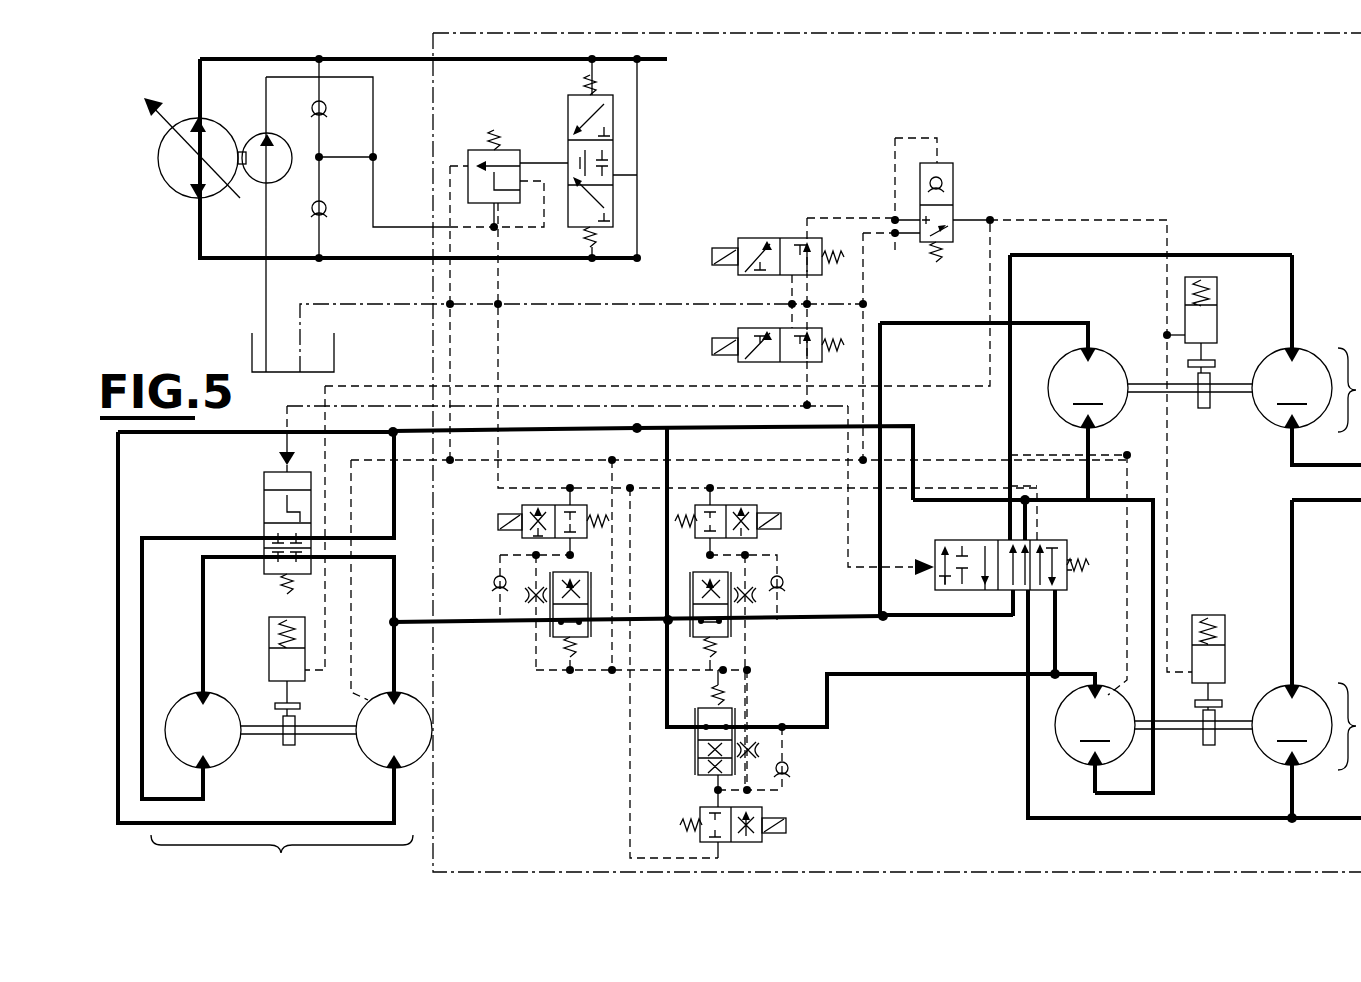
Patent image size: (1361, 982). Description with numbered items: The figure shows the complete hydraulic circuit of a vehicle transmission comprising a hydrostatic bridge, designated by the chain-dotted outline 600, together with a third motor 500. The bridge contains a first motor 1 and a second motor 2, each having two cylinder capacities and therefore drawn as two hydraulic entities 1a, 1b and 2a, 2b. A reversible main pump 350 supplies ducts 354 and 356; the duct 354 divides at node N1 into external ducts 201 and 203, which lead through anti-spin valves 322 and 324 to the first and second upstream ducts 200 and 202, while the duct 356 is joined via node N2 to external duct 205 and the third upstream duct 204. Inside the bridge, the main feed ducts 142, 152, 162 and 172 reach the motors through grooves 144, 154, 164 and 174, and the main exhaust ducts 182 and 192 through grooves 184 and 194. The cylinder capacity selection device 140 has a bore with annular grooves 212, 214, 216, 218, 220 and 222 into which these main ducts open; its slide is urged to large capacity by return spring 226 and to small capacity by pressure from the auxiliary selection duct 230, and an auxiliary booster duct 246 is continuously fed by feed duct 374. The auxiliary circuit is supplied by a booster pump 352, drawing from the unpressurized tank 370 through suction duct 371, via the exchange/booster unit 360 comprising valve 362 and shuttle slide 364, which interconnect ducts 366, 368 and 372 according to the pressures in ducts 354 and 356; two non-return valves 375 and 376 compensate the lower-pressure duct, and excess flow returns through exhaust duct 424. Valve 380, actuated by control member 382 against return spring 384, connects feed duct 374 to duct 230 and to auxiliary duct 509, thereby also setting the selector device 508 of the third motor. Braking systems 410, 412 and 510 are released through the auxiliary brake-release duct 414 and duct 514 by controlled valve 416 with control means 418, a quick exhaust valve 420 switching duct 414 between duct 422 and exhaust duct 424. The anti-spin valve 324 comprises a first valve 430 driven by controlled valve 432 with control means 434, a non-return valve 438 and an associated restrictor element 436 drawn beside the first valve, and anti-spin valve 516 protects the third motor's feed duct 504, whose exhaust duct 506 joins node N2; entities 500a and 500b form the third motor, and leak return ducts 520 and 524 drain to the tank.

The first motor 1 is at (1349, 390).
The second motor 2 is at (1349, 726).
The hydraulic entity of the first motor 1a is at (1088, 388).
The hydraulic entity of the first motor 1b is at (1230, 388).
The hydraulic entity of the second motor 2a is at (1095, 725).
The hydraulic entity of the second motor 2b is at (1233, 725).
The cylinder capacity selection device 140 is at (1005, 600).
The first main feed duct 142 is at (888, 325).
The first groove 144 is at (1118, 330).
The second main feed duct 152 is at (1210, 255).
The second groove 154 is at (1298, 342).
The third main feed duct 162 is at (1072, 662).
The third groove 164 is at (1101, 682).
The fourth main feed duct 172 is at (1326, 535).
The fourth groove 174 is at (1301, 682).
The first main exhaust duct 182 is at (1058, 499).
The fifth groove 184 is at (1077, 428).
The second main exhaust duct 192 is at (1027, 760).
The sixth groove 194 is at (1282, 440).
The first upstream duct 200 is at (862, 626).
The external duct 201 is at (680, 612).
The second upstream duct 202 is at (883, 678).
The external duct 203 is at (666, 657).
The third upstream duct 204 is at (893, 425).
The external duct 205 is at (718, 428).
The annular groove 212 is at (940, 585).
The annular groove 214 is at (940, 548).
The annular groove 216 is at (963, 545).
The annular groove 218 is at (961, 592).
The annular groove 220 is at (985, 545).
The annular groove 222 is at (990, 592).
The return spring 226 is at (1086, 570).
The auxiliary selection duct 230 is at (851, 568).
The auxiliary booster duct 246 is at (1046, 535).
The anti-spin valve 322 is at (772, 543).
The anti-spin valve 324 is at (686, 784).
The main pump 350 is at (183, 130).
The booster pump 352 is at (259, 181).
The duct 354 is at (220, 59).
The duct 356 is at (200, 255).
The exchange/booster unit 360 is at (500, 110).
The valve 362 is at (477, 148).
The shuttle slide 364 is at (616, 162).
The duct 366 is at (544, 228).
The duct 368 is at (450, 308).
The unpressurized tank 370 is at (252, 344).
The suction duct 371 is at (266, 293).
The duct 372 is at (541, 163).
The feed duct of the auxiliary circuit 374 is at (498, 296).
The non-return valve 375 is at (312, 114).
The non-return valve 376 is at (323, 216).
The valve 380 is at (754, 368).
The control member 382 is at (726, 349).
The return spring 384 is at (845, 352).
The braking system 410 is at (1218, 312).
The braking system 412 is at (1222, 615).
The auxiliary brake-release duct 414 is at (1046, 220).
The controlled valve 416 is at (769, 233).
The control means 418 is at (727, 250).
The quick exhaust valve 420 is at (950, 188).
The duct 422 is at (816, 212).
The exhaust duct 424 is at (386, 302).
The first valve 430 is at (698, 752).
The controlled valve 432 is at (745, 843).
The control means 434 is at (786, 823).
The flow restrictor 436 is at (755, 742).
The non-return valve 438 is at (792, 771).
The third motor 500 is at (265, 659).
The cylinder capacity half of the third motor 500a is at (208, 748).
The cylinder capacity half of the third motor 500b is at (381, 748).
The feed duct 504 is at (462, 625).
The exhaust duct 506 is at (577, 430).
The selector device 508 is at (258, 510).
The auxiliary duct 509 is at (285, 408).
The braking system 510 is at (268, 645).
The auxiliary brake-release duct 514 is at (325, 600).
The anti-spin valve 516 is at (518, 640).
The leak return duct 520 is at (1124, 452).
The leak return duct 524 is at (337, 592).
The chain-dotted outline 600 is at (433, 42).
The node N1 is at (666, 627).
The node N2 is at (637, 433).